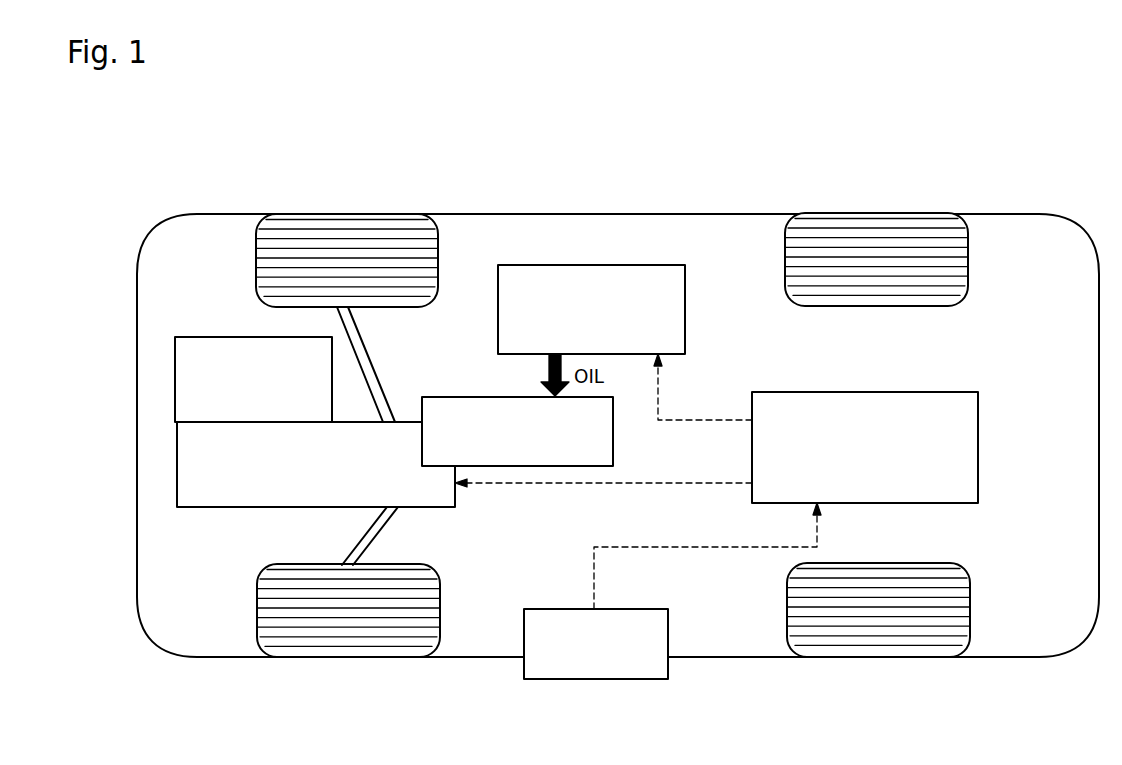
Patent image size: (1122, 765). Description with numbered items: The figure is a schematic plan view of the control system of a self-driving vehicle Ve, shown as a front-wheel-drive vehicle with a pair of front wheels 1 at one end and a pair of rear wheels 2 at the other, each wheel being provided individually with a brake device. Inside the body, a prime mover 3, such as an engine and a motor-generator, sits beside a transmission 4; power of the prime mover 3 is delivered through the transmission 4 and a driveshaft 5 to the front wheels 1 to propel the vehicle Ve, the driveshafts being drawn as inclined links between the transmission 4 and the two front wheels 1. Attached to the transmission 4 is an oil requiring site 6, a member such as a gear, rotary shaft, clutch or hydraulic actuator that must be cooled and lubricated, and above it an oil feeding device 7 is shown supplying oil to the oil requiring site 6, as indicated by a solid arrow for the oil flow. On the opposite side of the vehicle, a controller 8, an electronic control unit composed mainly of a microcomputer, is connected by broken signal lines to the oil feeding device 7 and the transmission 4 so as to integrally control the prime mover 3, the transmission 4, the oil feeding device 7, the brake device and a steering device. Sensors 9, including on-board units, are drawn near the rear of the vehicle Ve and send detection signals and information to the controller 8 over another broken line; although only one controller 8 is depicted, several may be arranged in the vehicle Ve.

The vehicle Ve is at (717, 167).
The front wheels 1 is at (345, 214).
The rear wheels 2 is at (882, 213).
The prime mover 3 is at (215, 337).
The transmission 4 is at (214, 507).
The driveshaft 5 is at (372, 355).
The oil requiring site 6 is at (613, 445).
The oil feeding device 7 is at (685, 316).
The controller 8 is at (978, 452).
The sensors 9 is at (598, 679).